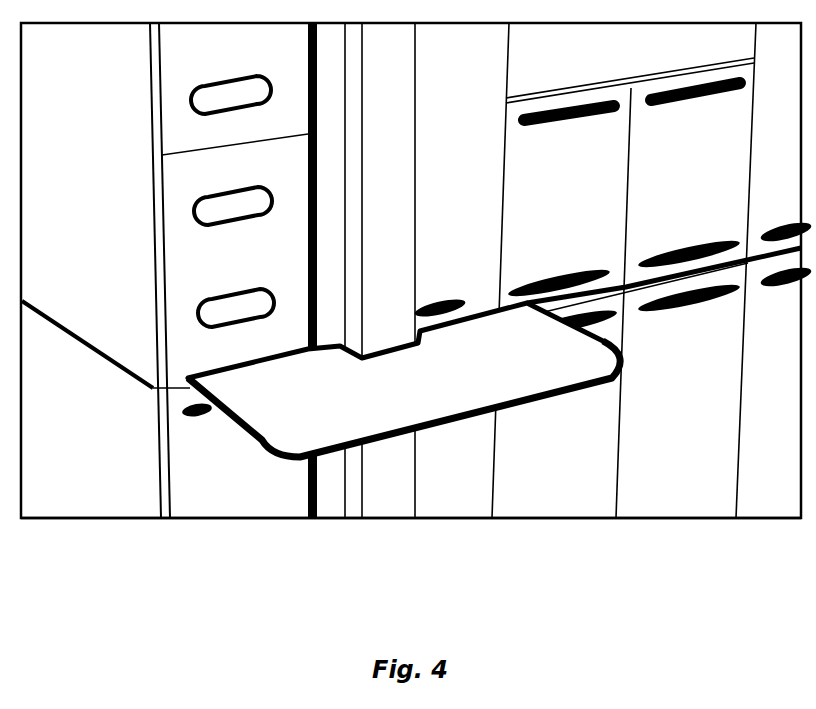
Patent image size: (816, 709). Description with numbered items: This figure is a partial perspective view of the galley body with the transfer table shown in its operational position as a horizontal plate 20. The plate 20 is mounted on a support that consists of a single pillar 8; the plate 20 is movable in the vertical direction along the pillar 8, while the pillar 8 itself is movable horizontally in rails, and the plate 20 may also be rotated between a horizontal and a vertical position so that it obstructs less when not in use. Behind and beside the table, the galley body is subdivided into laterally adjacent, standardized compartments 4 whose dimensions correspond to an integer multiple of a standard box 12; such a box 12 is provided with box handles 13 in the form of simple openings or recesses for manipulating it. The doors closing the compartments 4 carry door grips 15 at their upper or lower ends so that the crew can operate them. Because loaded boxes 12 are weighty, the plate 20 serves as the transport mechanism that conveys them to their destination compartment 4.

The compartments 4 is at (186, 359).
The pillar 8 is at (390, 502).
The standard box 12 is at (218, 63).
The box handles 13 is at (210, 95).
The door grips 15 is at (559, 107).
The horizontal plate 20 is at (530, 381).